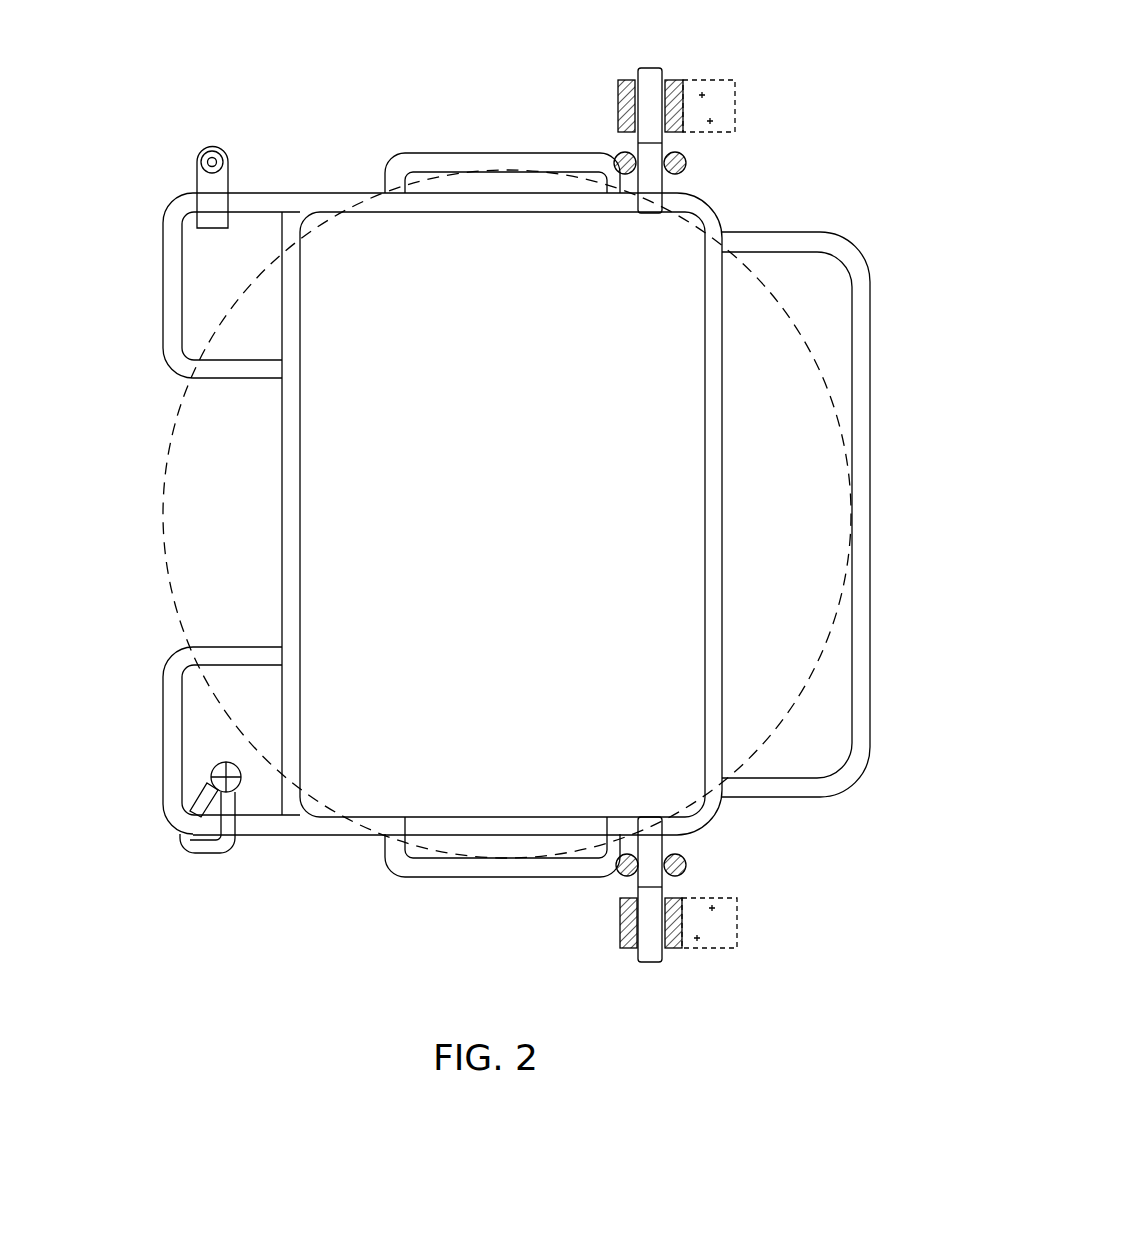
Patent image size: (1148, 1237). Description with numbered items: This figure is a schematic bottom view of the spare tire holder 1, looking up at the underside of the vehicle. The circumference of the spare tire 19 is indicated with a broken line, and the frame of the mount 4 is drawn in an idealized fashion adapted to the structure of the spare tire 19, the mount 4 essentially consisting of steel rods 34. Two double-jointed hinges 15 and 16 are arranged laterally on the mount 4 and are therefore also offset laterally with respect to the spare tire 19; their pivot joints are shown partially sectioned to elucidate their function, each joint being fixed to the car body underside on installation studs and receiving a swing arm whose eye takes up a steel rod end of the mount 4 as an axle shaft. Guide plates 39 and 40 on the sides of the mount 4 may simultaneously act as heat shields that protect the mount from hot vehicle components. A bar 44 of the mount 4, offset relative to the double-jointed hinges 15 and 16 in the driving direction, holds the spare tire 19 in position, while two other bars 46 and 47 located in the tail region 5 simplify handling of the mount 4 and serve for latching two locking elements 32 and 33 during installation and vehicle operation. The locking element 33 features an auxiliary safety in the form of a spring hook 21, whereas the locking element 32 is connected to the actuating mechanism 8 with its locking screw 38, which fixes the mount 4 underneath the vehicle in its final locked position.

The spare tire holder 1 is at (838, 188).
The mount 4 is at (517, 511).
The tail region 5 is at (474, 514).
The actuating mechanism 8 is at (251, 165).
The double-jointed hinge 15 is at (668, 159).
The double-jointed hinge 16 is at (658, 871).
The spare tire 19 is at (822, 514).
The spring hook 21 is at (207, 852).
The locking element 32 is at (188, 160).
The locking element 33 is at (163, 833).
The steel rods 34 is at (300, 504).
The locking screw 38 is at (210, 152).
The guide plate 39 is at (470, 160).
The guide plate 40 is at (470, 872).
The bar 44 is at (862, 650).
The bar 46 is at (164, 750).
The bar 47 is at (165, 296).